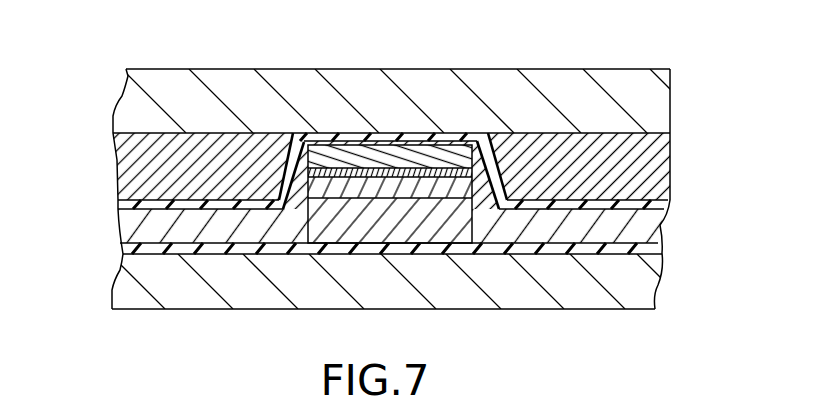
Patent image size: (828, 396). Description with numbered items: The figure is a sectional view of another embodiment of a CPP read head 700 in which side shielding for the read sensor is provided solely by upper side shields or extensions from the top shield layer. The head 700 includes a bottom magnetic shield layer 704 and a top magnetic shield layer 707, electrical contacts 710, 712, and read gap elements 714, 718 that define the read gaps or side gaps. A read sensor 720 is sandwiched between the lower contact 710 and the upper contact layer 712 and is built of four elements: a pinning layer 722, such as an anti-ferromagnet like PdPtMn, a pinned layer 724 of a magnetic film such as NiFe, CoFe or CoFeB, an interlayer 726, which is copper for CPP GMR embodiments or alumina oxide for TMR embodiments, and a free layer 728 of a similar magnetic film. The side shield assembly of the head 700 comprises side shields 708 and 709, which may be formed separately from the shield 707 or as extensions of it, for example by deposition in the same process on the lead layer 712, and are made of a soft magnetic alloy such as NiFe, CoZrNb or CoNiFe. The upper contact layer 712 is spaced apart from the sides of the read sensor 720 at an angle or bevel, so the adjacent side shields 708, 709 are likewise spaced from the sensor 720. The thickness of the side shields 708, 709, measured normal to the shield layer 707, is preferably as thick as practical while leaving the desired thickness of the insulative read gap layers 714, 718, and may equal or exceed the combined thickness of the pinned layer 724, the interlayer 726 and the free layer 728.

The CPP read head 700 is at (107, 46).
The bottom magnetic shield layer 704 is at (655, 310).
The top magnetic shield layer 707 is at (663, 112).
The side shield 708 is at (123, 163).
The side shield 709 is at (658, 165).
The electrical contact 710 is at (647, 288).
The upper contact layer 712 is at (665, 203).
The read gap element 714 is at (648, 230).
The read gap element 718 is at (140, 225).
The read sensor 720 is at (327, 258).
The pinning layer 722 is at (350, 232).
The pinned layer 724 is at (367, 190).
The interlayer 726 is at (420, 173).
The free layer 728 is at (368, 153).